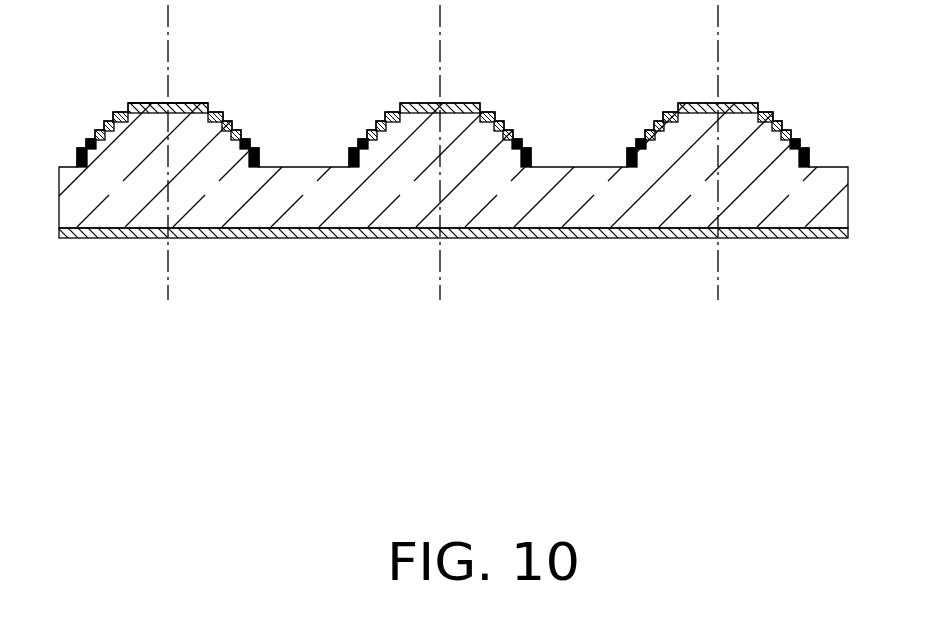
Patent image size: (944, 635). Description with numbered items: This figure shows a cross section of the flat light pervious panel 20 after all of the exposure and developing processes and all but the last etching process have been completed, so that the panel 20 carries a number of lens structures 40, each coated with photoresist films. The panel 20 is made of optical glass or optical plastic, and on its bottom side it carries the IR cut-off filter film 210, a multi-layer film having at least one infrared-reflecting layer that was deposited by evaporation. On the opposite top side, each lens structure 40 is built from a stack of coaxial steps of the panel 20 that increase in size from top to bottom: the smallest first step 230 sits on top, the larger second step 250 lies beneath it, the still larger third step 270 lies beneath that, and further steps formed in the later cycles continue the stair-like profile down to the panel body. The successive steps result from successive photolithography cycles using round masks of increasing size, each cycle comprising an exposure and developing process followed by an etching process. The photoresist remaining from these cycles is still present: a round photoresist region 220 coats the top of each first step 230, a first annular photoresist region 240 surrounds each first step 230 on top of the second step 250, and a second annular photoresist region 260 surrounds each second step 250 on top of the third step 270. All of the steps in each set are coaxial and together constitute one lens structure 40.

The flat light pervious panel 20 is at (817, 202).
The lens structure 40 is at (152, 130).
The IR cut-off filter film 210 is at (300, 238).
The round photoresist region 220 is at (137, 103).
The first step 230 is at (197, 103).
The first annular photoresist region 240 is at (115, 113).
The second step 250 is at (217, 112).
The second annular photoresist region 260 is at (103, 122).
The third step 270 is at (236, 122).